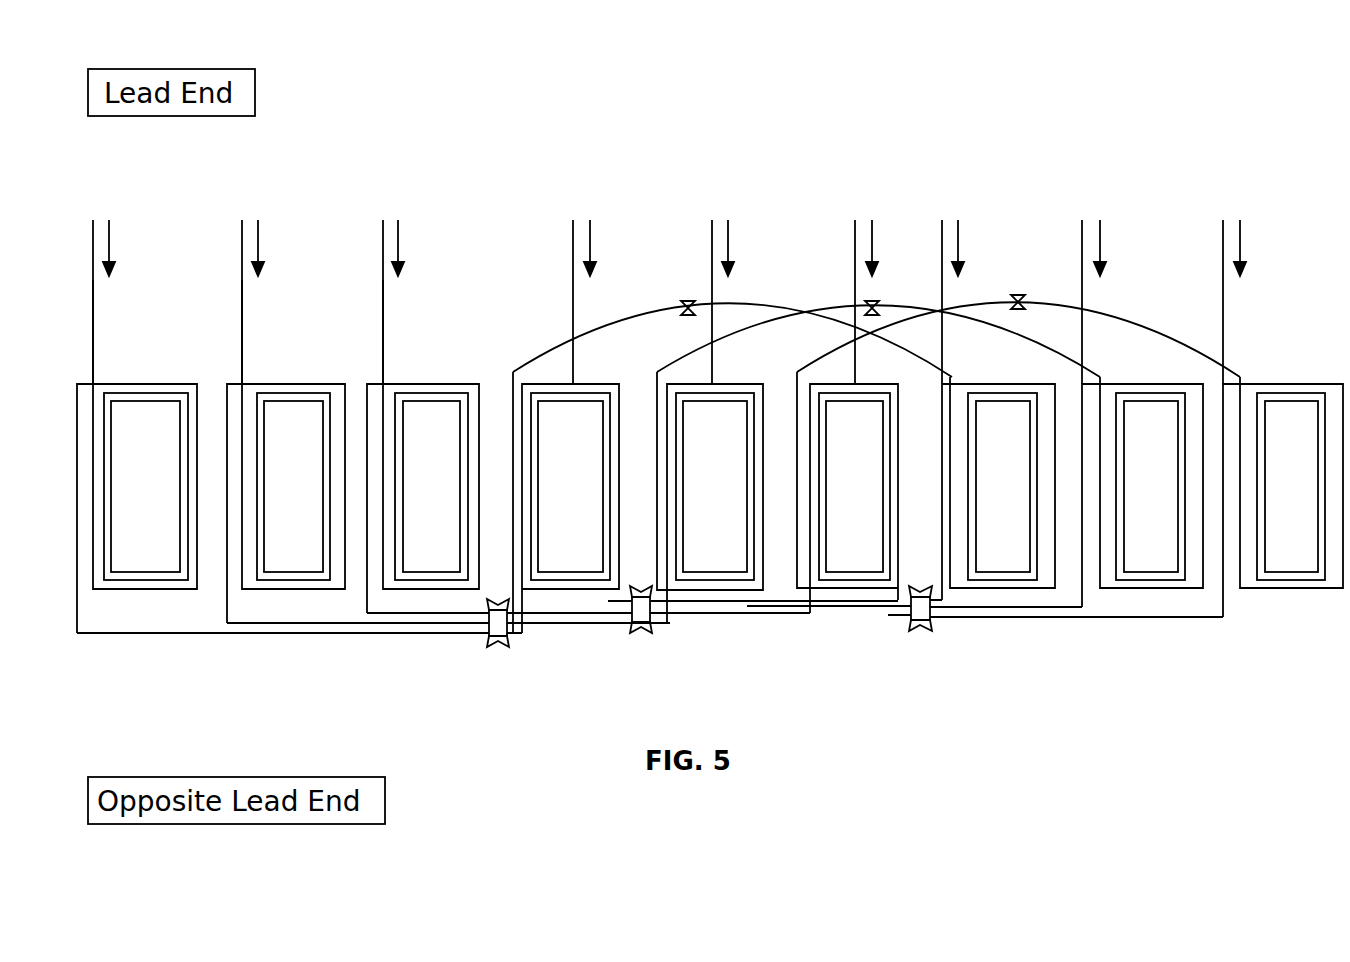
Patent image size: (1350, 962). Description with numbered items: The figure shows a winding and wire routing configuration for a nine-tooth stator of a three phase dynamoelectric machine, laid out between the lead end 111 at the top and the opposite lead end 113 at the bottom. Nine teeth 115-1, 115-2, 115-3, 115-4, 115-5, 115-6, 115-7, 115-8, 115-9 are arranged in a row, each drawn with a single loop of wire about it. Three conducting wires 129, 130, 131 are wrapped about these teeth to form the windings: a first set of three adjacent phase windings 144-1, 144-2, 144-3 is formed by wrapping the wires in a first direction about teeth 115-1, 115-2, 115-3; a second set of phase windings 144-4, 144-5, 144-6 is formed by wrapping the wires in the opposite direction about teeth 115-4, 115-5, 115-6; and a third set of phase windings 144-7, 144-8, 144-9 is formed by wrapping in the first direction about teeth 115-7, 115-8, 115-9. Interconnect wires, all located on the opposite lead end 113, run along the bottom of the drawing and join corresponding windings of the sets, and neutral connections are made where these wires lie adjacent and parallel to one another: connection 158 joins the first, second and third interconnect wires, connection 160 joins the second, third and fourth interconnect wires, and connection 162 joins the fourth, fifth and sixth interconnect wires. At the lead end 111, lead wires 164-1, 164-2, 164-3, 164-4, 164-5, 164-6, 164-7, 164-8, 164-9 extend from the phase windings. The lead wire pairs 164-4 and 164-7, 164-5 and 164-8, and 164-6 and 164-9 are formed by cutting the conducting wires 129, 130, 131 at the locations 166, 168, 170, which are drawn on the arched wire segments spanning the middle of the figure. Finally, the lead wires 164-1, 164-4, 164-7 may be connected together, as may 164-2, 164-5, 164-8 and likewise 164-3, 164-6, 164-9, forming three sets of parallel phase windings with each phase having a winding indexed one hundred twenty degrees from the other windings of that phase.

The lead end 111 is at (80, 362).
The opposite lead end 113 is at (118, 637).
The tooth 115-1 is at (137, 550).
The tooth 115-2 is at (298, 540).
The tooth 115-3 is at (437, 548).
The tooth 115-4 is at (583, 550).
The tooth 115-5 is at (727, 550).
The tooth 115-6 is at (857, 550).
The tooth 115-7 is at (1013, 550).
The tooth 115-8 is at (1150, 550).
The tooth 115-9 is at (1300, 550).
The conducting wire 129 is at (93, 345).
The conducting wire 130 is at (242, 345).
The conducting wire 131 is at (383, 345).
The phase winding 144-1 is at (170, 383).
The phase winding 144-2 is at (311, 383).
The phase winding 144-3 is at (455, 383).
The phase winding 144-4 is at (549, 383).
The phase winding 144-5 is at (694, 383).
The phase winding 144-6 is at (824, 383).
The phase winding 144-7 is at (972, 383).
The phase winding 144-8 is at (1136, 383).
The phase winding 144-9 is at (1276, 383).
The connection 158 is at (497, 648).
The connection 160 is at (640, 636).
The connection 162 is at (920, 633).
The lead wire 164-1 is at (93, 243).
The lead wire 164-2 is at (242, 244).
The lead wire 164-3 is at (383, 244).
The lead wire 164-4 is at (573, 246).
The lead wire 164-5 is at (712, 256).
The lead wire 164-6 is at (855, 246).
The lead wire 164-7 is at (942, 250).
The lead wire 164-8 is at (1082, 250).
The lead wire 164-9 is at (1223, 250).
The cut location 166 is at (688, 300).
The cut location 168 is at (872, 301).
The cut location 170 is at (1018, 295).